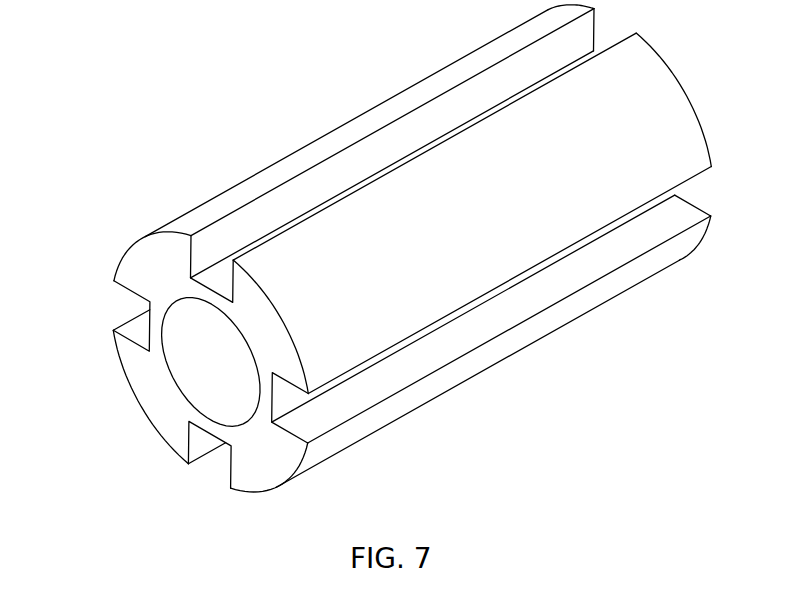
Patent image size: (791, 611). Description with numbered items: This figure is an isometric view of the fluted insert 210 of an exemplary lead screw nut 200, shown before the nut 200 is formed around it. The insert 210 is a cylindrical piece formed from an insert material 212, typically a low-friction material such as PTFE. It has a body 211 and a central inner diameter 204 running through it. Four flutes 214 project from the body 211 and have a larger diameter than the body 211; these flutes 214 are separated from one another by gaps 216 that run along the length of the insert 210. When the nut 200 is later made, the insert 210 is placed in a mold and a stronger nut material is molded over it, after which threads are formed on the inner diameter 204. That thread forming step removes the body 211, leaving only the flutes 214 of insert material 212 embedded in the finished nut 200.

The lead screw nut 200 is at (369, 263).
The fluted insert 210 is at (369, 263).
The flutes 214 is at (478, 207).
The gaps 216 is at (446, 340).
The insert material 212 is at (143, 263).
The body 211 is at (278, 398).
The inner diameter 204 is at (206, 372).